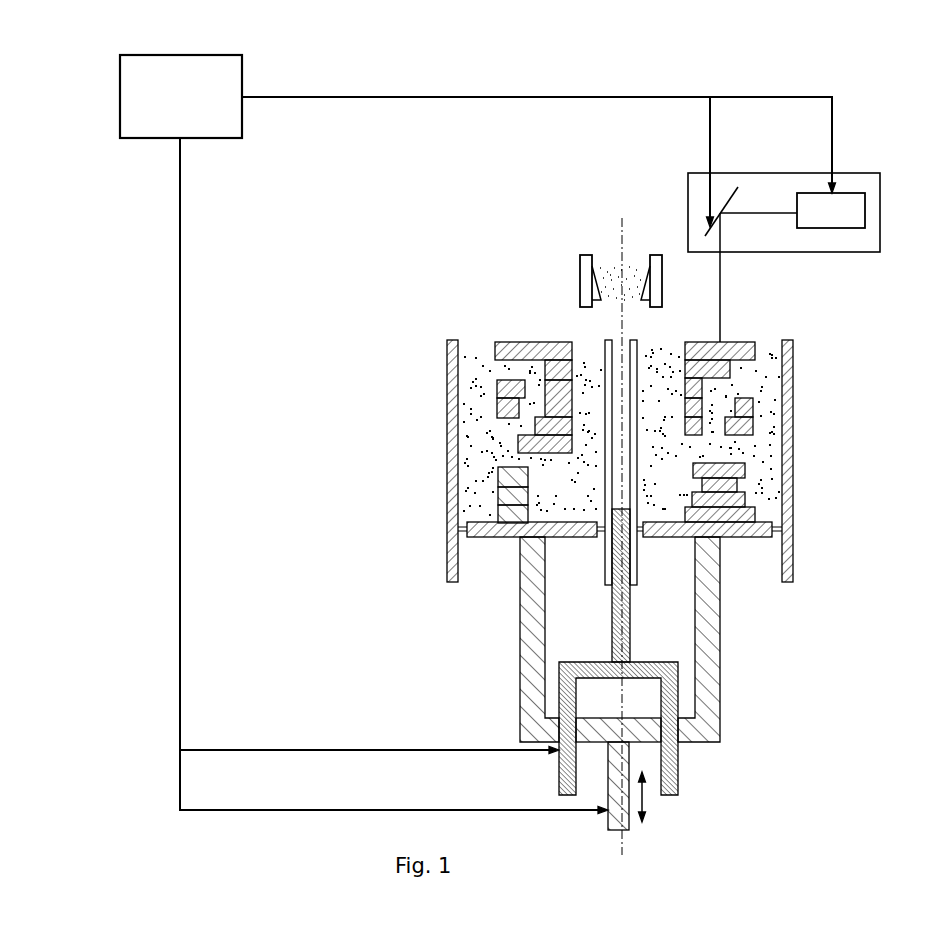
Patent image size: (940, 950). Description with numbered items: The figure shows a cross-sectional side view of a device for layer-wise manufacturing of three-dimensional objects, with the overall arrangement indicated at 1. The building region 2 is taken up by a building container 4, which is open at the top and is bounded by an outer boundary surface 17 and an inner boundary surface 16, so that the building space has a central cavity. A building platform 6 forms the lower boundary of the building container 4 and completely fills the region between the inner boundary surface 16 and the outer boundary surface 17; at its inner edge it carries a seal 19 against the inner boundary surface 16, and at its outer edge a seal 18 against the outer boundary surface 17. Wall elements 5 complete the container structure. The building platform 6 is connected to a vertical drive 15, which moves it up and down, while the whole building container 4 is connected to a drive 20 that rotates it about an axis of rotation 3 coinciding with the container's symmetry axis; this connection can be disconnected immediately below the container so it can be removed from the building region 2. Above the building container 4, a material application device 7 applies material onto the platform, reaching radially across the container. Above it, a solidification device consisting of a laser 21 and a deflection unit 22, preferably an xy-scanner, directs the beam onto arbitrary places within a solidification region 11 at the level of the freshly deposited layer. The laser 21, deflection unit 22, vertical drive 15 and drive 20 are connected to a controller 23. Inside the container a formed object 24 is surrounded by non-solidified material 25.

The control unit 1 is at (811, 187).
The building region 2 is at (772, 441).
The axis of rotation 3 is at (622, 848).
The building container 4 is at (623, 459).
The wall plate 5 is at (623, 486).
The building platform 6 is at (502, 540).
The material application device 7 is at (662, 278).
The solidification region 11 is at (735, 342).
The vertical drive 15 is at (608, 818).
The inner boundary surface 16 is at (605, 462).
The outer boundary surface 17 is at (793, 465).
The seal 18 is at (778, 526).
The seal 19 is at (614, 472).
The drive 20 is at (630, 612).
The laser 21 is at (865, 210).
The deflection unit 22 is at (738, 187).
The controller 23 is at (120, 113).
The formed object 24 is at (490, 385).
The non-solidified material 25 is at (475, 438).